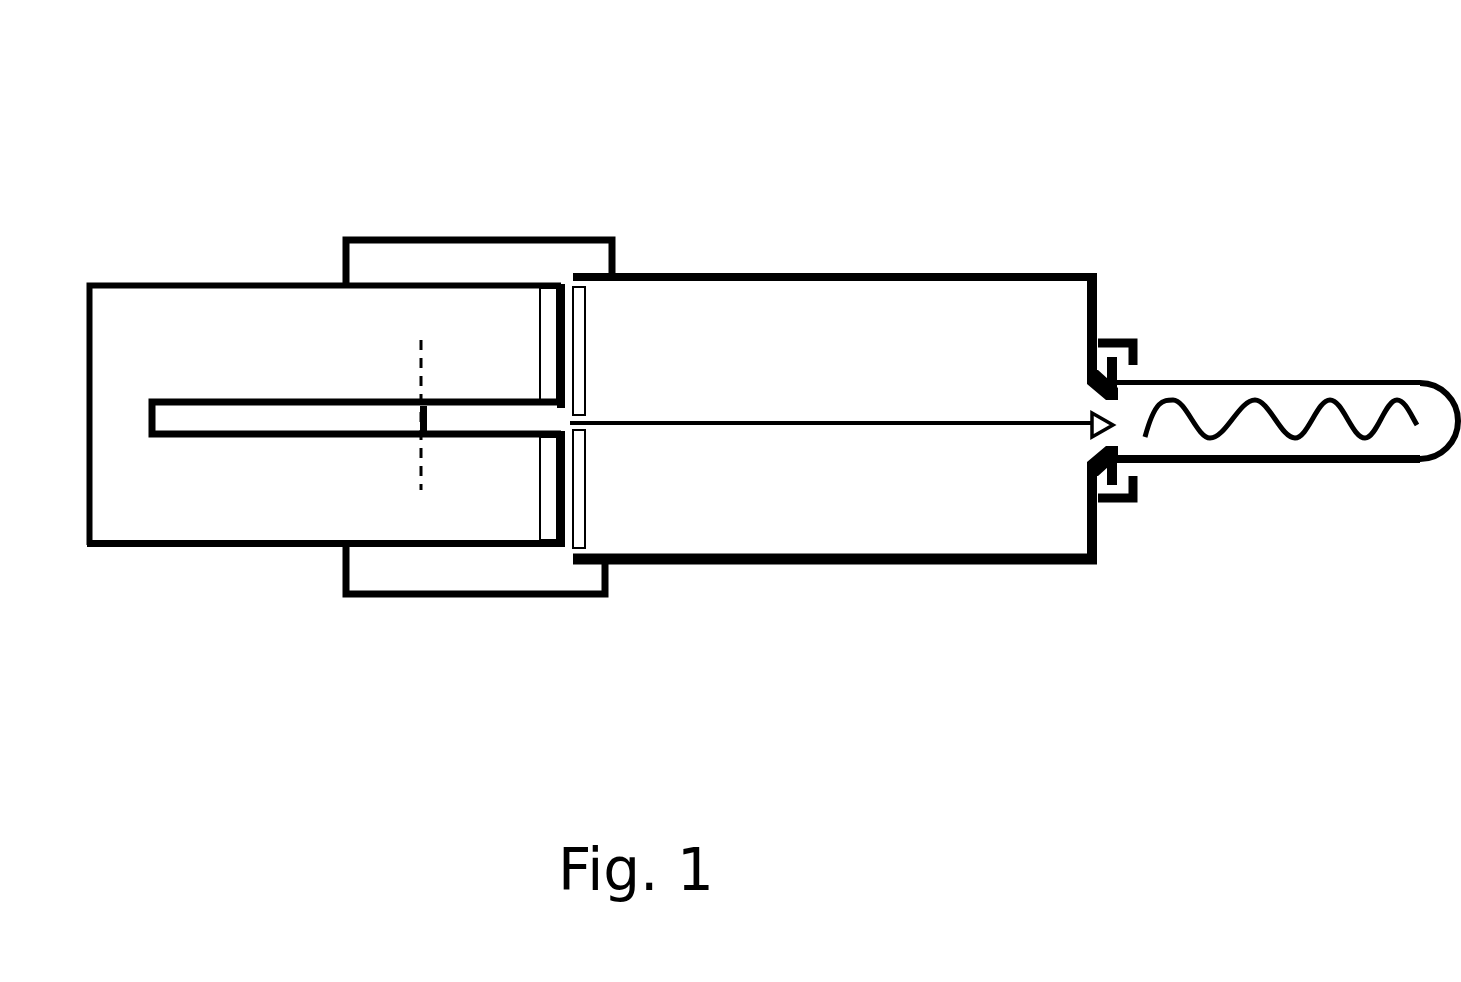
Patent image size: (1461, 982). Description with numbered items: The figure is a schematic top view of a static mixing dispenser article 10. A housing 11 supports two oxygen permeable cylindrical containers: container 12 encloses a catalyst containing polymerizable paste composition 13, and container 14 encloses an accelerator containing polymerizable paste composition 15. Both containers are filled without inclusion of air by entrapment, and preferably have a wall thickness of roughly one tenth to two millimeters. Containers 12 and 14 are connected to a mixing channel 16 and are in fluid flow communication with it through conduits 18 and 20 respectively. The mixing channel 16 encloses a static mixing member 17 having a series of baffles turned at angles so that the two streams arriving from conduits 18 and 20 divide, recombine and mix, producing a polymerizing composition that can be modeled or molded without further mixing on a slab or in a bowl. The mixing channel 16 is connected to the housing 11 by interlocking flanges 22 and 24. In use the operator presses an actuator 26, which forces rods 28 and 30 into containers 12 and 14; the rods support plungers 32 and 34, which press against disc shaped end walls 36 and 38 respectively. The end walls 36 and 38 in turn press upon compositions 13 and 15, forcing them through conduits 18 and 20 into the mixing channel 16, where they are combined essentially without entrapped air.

The dispenser article 10 is at (985, 150).
The housing 11 is at (618, 245).
The oxygen permeable cylindrical container 12 is at (795, 277).
The catalyst containing polymerizable paste composition 13 is at (832, 363).
The oxygen permeable cylindrical container 14 is at (758, 565).
The accelerator containing polymerizable paste composition 15 is at (828, 502).
The mixing channel 16 is at (1275, 380).
The static mixing member 17 is at (1293, 440).
The conduit 18 is at (1090, 393).
The conduit 20 is at (1090, 453).
The interlocking flange 22 is at (1117, 465).
The interlocking flange 24 is at (1120, 504).
The actuator 26 is at (422, 428).
The rod 28 is at (252, 283).
The rod 30 is at (225, 547).
The plunger 32 is at (545, 285).
The plunger 34 is at (552, 550).
The disc shaped end wall 36 is at (585, 323).
The disc shaped end wall 38 is at (600, 489).